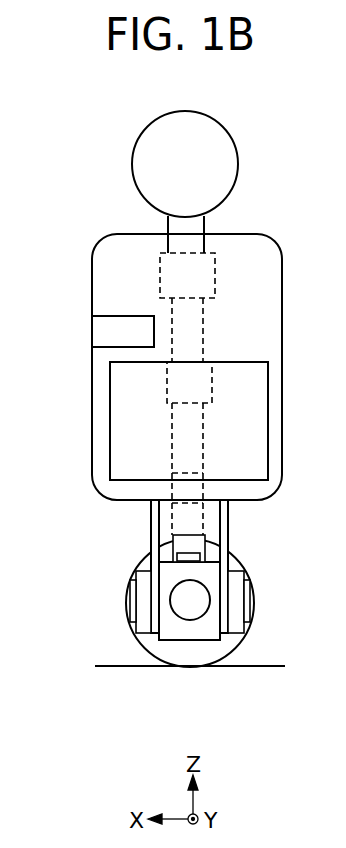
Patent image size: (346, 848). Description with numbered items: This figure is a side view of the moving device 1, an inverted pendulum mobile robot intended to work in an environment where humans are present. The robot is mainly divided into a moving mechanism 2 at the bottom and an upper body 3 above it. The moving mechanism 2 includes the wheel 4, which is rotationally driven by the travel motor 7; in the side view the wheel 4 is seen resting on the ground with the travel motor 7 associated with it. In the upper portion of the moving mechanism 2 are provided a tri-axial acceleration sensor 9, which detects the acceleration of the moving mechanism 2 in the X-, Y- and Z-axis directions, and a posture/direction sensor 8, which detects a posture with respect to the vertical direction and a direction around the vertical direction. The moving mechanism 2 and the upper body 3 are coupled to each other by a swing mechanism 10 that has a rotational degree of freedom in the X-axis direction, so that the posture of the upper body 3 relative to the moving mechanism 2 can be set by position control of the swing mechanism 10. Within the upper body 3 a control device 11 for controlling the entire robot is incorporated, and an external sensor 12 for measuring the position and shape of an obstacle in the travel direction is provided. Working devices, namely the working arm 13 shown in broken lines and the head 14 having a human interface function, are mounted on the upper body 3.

The moving device 1 is at (127, 247).
The moving mechanism 2 is at (198, 610).
The upper body 3 is at (235, 245).
The wheel 4 is at (235, 567).
The travel motor 7 is at (192, 632).
The posture/direction sensor 8 is at (182, 555).
The tri-axial acceleration sensor 9 is at (176, 540).
The swing mechanism 10 is at (130, 598).
The control device 11 is at (122, 425).
The external sensor 12 is at (104, 330).
The working arm 13 is at (202, 278).
The head 14 is at (140, 152).